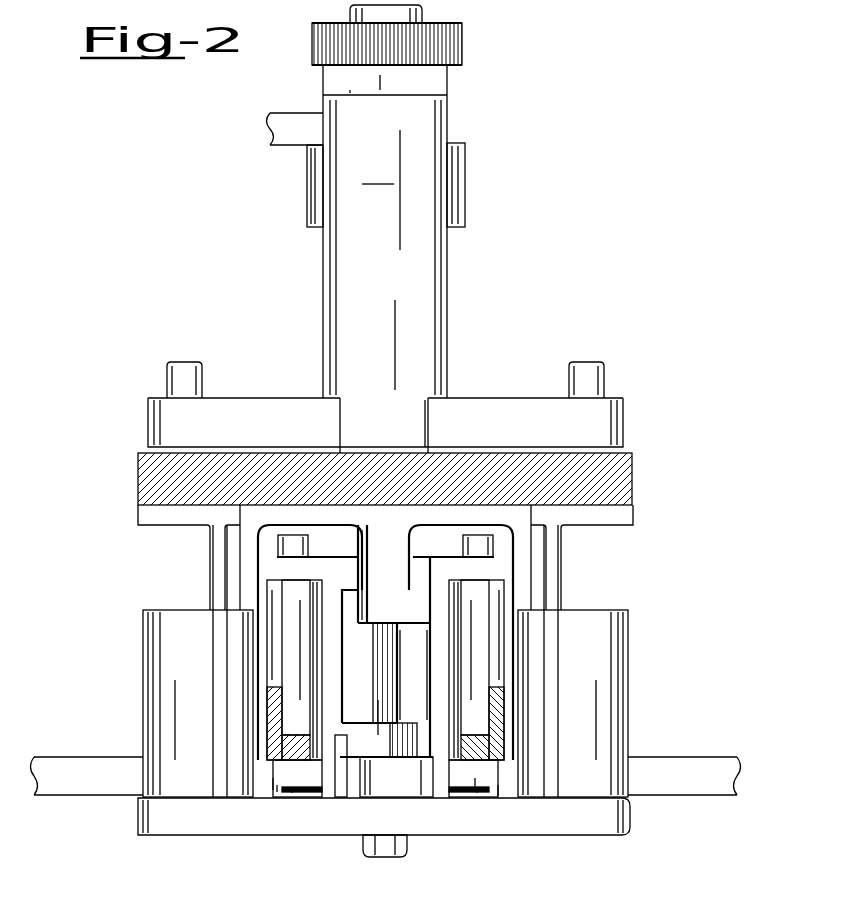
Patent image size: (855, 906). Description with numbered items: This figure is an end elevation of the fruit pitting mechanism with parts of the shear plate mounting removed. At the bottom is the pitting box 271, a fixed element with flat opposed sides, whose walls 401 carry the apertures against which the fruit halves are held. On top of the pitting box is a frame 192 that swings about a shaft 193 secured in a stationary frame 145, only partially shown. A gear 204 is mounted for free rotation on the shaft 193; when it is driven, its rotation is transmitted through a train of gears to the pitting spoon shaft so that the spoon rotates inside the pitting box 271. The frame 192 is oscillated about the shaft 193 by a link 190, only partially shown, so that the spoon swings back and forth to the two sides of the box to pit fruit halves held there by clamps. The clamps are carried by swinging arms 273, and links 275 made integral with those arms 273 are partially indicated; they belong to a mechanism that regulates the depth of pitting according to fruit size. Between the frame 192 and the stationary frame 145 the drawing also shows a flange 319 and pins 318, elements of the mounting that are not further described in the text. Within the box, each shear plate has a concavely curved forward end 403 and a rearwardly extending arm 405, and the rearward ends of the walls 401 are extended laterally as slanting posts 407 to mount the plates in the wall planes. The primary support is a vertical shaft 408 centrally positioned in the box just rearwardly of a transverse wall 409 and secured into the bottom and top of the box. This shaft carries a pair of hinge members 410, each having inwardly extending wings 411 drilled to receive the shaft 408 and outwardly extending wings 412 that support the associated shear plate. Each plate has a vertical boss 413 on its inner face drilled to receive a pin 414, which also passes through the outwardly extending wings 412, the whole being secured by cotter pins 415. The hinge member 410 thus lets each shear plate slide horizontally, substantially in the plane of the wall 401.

The stationary frame 145 is at (165, 480).
The link 190 is at (290, 128).
The frame 192 is at (385, 259).
The shaft 193 is at (425, 19).
The gear 204 is at (462, 48).
The pitting box 271 is at (503, 845).
The arms 273 is at (178, 673).
The links 275 is at (78, 775).
The locating pin 318 is at (185, 378).
The flange 319 is at (180, 422).
The wall 401 is at (250, 541).
The concavely curved forward end 403 is at (430, 692).
The rearwardly extending arm 405 is at (273, 780).
The slanting posts 407 is at (222, 565).
The vertical shaft 408 is at (388, 675).
The transverse wall 409 is at (413, 675).
The hinge members 410 is at (338, 742).
The inwardly extending wings 411 is at (373, 735).
The outwardly extending wings 412 is at (313, 775).
The vertical boss 413 is at (290, 652).
The pin 414 is at (292, 790).
The cotter pins 415 is at (277, 787).